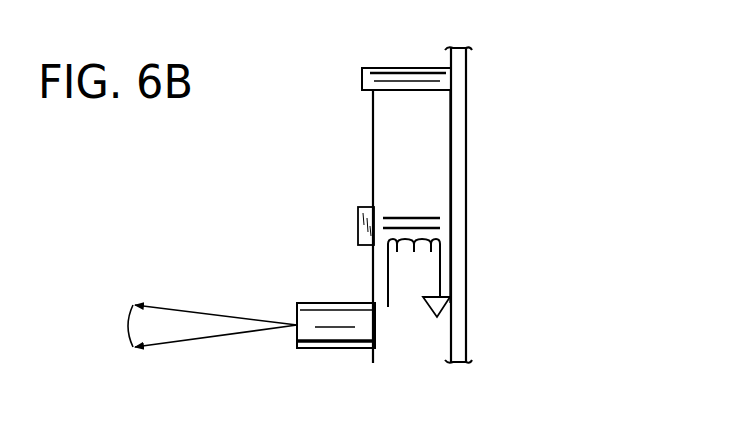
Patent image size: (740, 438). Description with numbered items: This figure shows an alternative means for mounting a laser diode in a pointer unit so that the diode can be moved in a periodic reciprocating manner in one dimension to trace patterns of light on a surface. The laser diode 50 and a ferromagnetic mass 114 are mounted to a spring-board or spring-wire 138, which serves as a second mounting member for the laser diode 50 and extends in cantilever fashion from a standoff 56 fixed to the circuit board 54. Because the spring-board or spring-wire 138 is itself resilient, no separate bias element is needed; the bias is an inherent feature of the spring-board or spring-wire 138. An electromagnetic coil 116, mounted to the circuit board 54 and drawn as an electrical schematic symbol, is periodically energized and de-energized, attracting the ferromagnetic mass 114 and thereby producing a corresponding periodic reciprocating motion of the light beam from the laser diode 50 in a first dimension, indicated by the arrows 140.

The standoff 56 is at (398, 67).
The spring-board or spring-wire 138 is at (373, 137).
The circuit board 54 is at (460, 147).
The electromagnetic coil 116 is at (413, 218).
The ferromagnetic mass 114 is at (358, 228).
The laser diode 50 is at (315, 348).
The arrows 140 is at (137, 358).